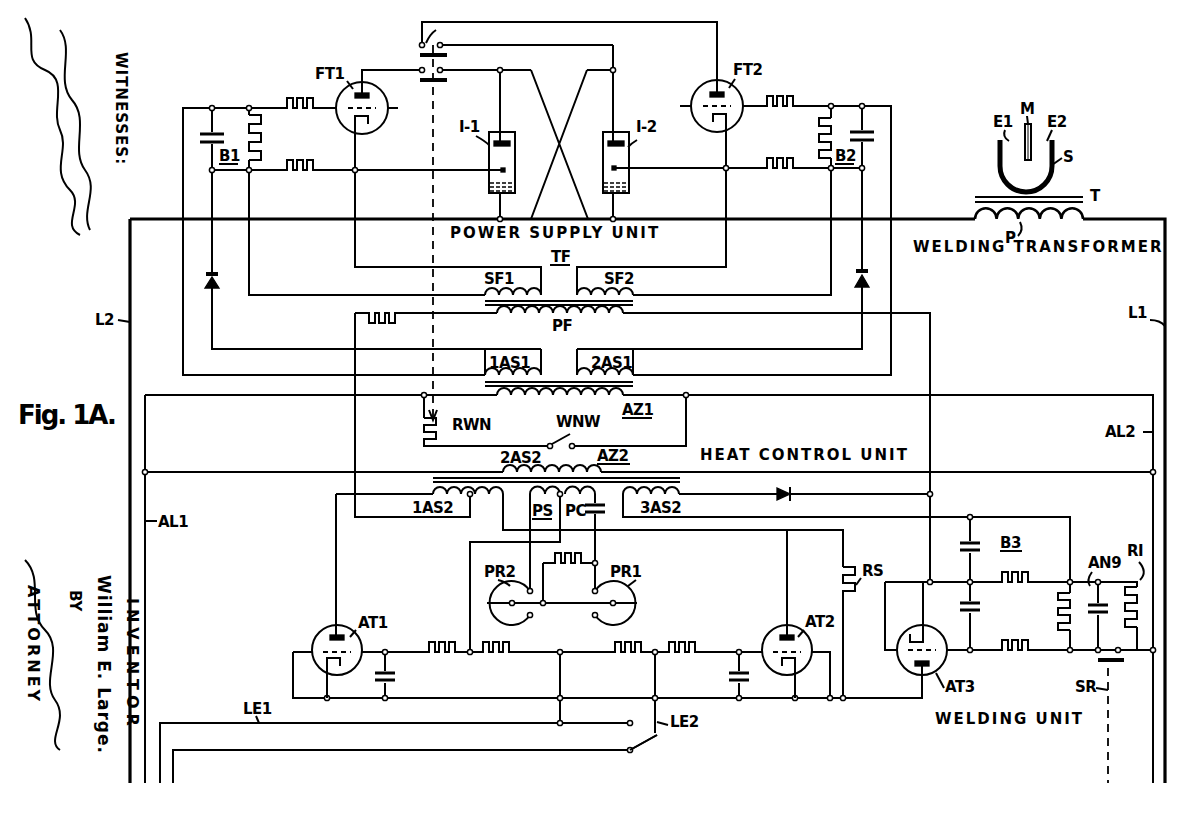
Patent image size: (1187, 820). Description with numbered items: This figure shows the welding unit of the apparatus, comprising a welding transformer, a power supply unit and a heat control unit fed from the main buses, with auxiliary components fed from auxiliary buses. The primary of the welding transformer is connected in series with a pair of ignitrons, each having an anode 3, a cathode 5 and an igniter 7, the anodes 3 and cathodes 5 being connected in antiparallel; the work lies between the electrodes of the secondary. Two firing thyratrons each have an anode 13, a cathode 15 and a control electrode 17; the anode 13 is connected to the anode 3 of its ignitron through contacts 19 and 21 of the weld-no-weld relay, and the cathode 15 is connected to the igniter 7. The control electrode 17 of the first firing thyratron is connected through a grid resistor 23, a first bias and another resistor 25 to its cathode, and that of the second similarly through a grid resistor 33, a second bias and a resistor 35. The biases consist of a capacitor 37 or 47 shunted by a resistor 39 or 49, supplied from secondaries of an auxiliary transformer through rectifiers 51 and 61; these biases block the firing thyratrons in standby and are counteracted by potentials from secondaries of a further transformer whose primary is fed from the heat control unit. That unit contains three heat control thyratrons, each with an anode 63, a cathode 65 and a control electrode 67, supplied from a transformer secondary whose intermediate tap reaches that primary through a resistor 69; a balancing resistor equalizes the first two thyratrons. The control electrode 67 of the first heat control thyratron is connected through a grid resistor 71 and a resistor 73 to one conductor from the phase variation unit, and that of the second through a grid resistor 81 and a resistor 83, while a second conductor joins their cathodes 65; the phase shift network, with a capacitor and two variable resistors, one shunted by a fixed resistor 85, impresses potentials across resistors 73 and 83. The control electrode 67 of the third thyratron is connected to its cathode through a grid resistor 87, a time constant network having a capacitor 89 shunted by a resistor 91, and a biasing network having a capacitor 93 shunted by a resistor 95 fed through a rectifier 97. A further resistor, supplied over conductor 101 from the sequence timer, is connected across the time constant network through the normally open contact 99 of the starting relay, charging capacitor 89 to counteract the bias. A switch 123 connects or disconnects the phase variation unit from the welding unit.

The contact of weld-no-weld relay 21 is at (435, 43).
The contact of weld-no-weld relay 19 is at (447, 81).
The anode of firing thyratron 13 is at (367, 93).
The control electrode of firing thyratron 17 is at (691, 107).
The cathode of firing thyratron 15 is at (363, 128).
The grid resistor 23 is at (305, 98).
The resistor 25 is at (304, 171).
The resistor 39 is at (257, 113).
The capacitor 37 is at (200, 138).
The grid resistor 33 is at (783, 98).
The resistor 35 is at (780, 162).
The resistor 49 is at (819, 136).
The capacitor 47 is at (869, 139).
The anode of ignitron 3 is at (510, 141).
The igniter of ignitron 7 is at (489, 174).
The cathode of ignitron 5 is at (490, 189).
The rectifier 51 is at (217, 284).
The rectifier 61 is at (859, 284).
The resistor 69 is at (385, 322).
The rectifier 97 is at (791, 497).
The capacitor 93 is at (962, 544).
The resistor 95 is at (1019, 573).
The resistor 91 is at (1058, 609).
The capacitor 89 is at (1107, 611).
The grid resistor 87 is at (1013, 652).
The fixed resistor 85 is at (578, 565).
The resistor 83 is at (612, 646).
The grid resistor 81 is at (680, 648).
The grid resistor 71 is at (446, 660).
The resistor 73 is at (492, 660).
The anode of thyratron 63 is at (326, 635).
The control electrode of thyratron 67 is at (363, 652).
The cathode of thyratron 65 is at (333, 674).
The normally open contact of starting relay 99 is at (1097, 660).
The conductor 101 is at (1153, 739).
The switch 123 is at (646, 746).